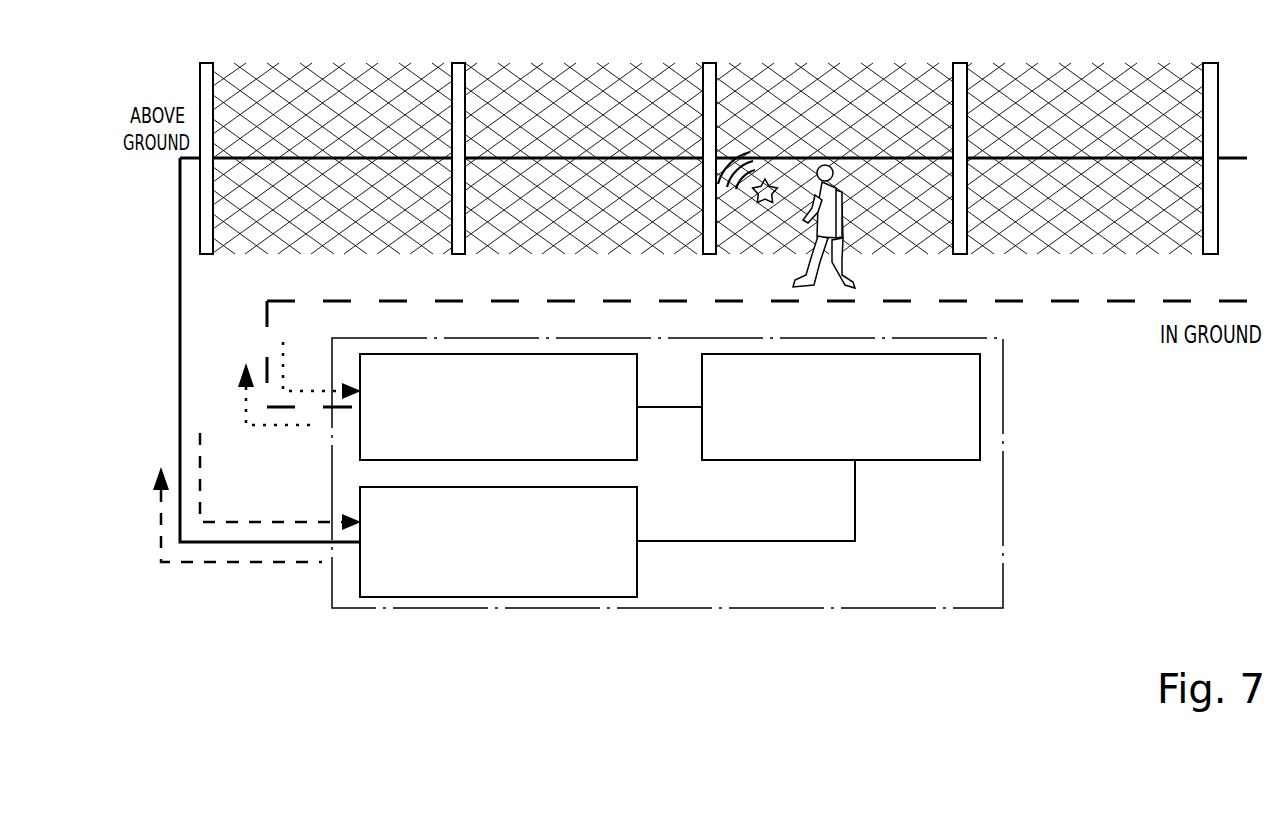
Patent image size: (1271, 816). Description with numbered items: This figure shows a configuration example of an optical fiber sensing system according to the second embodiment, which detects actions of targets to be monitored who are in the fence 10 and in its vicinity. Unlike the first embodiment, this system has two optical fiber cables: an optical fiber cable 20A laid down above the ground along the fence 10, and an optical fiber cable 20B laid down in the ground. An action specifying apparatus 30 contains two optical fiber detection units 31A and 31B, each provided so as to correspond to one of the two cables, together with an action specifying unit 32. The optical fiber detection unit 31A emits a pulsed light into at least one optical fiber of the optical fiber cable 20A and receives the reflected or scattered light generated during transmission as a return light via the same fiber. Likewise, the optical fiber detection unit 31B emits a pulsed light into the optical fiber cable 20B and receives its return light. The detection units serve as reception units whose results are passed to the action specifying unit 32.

The fence 10 is at (248, 63).
The optical fiber cable 20A is at (176, 246).
The optical fiber cable 20B is at (1062, 306).
The action specifying apparatus 30 is at (1008, 452).
The optical fiber detection unit 31A is at (640, 531).
The optical fiber detection unit 31B is at (640, 396).
The action specifying unit 32 is at (948, 462).